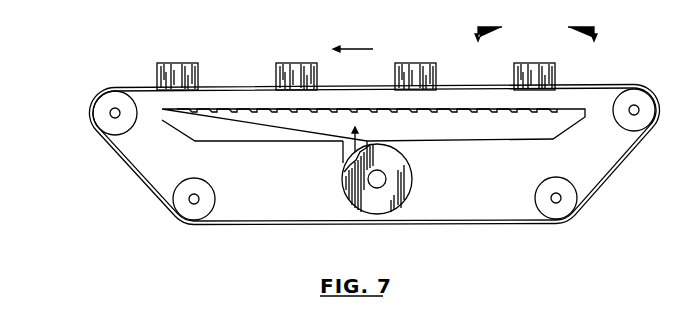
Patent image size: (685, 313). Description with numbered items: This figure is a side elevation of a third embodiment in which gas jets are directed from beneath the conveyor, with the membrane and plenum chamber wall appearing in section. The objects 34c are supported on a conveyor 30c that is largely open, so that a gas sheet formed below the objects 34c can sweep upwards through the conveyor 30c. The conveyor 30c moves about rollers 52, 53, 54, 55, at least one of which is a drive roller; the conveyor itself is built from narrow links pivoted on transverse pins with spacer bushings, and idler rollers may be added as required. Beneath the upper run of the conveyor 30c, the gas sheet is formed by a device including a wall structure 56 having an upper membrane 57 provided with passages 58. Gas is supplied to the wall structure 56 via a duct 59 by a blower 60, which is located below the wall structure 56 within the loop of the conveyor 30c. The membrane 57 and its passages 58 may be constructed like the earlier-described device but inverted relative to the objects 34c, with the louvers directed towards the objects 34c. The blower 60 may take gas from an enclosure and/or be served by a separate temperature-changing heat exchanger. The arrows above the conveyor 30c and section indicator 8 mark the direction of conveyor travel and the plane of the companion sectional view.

The conveyor 30c is at (438, 221).
The objects 34c is at (186, 64).
The roller 52 is at (627, 120).
The roller 53 is at (122, 123).
The roller 54 is at (212, 201).
The roller 55 is at (538, 198).
The wall structure 56 is at (373, 135).
The upper membrane 57 is at (367, 122).
The passages 58 is at (433, 110).
The duct 59 is at (350, 163).
The blower 60 is at (405, 173).
The section line 8- 8 is at (535, 44).